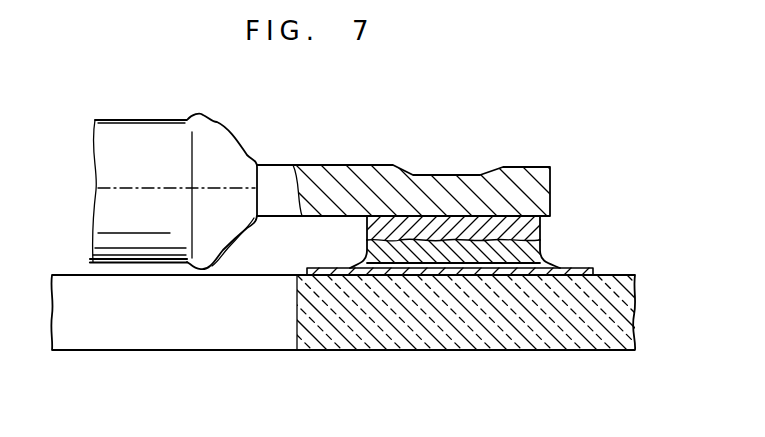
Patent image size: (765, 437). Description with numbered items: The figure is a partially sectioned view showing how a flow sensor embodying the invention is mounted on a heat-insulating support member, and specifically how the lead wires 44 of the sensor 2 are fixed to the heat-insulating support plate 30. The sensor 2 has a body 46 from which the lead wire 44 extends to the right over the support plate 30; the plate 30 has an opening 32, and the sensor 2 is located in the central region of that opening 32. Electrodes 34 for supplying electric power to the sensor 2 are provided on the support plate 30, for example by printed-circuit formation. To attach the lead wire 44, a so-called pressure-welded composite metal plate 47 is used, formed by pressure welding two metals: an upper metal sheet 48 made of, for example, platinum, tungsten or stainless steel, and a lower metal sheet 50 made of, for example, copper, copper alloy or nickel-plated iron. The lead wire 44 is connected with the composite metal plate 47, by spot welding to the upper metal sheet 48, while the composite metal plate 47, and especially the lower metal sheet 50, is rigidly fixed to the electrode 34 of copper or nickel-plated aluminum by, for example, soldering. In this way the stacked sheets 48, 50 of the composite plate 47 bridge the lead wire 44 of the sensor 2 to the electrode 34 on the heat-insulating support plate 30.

The sensor 2 is at (161, 112).
The housing / casing 46 is at (113, 130).
The lead wire 44 is at (552, 172).
The upper metal sheet 48 is at (542, 225).
The pressure-welded composite metal plate 47 is at (356, 238).
The lower metal sheet 50 is at (542, 248).
The electrode 34 is at (593, 268).
The opening 32 is at (150, 340).
The heat-insulating support plate 30 is at (337, 340).